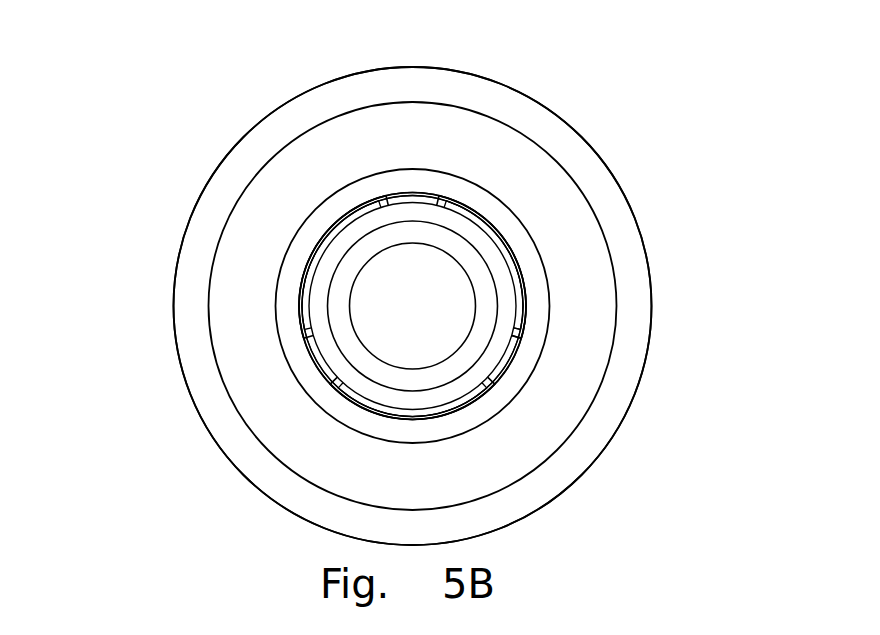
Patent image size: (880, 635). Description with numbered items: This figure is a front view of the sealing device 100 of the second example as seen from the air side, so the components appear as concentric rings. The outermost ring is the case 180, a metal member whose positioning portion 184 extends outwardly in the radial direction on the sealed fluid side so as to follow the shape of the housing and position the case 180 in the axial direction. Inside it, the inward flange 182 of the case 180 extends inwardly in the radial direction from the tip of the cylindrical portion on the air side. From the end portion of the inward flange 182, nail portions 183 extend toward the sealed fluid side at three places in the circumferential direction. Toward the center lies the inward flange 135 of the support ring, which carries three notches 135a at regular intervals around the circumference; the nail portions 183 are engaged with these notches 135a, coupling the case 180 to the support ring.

The sealing device 100 is at (640, 152).
The inward flange 135 is at (473, 217).
The notches 135a is at (522, 340).
The case 180 is at (219, 162).
The inward flange 182 is at (347, 413).
The nail portions 183 is at (512, 361).
The positioning portion 184 is at (197, 250).